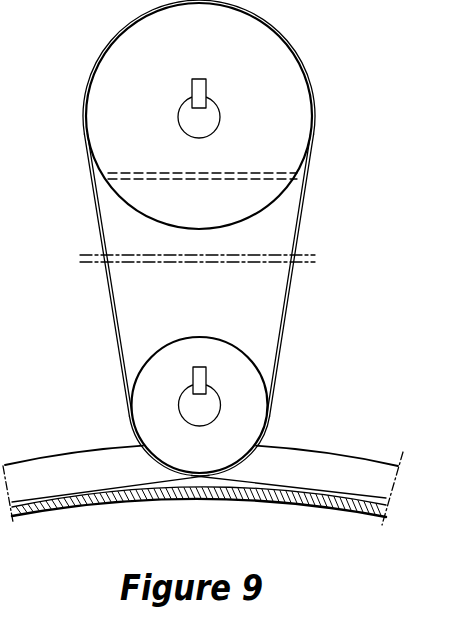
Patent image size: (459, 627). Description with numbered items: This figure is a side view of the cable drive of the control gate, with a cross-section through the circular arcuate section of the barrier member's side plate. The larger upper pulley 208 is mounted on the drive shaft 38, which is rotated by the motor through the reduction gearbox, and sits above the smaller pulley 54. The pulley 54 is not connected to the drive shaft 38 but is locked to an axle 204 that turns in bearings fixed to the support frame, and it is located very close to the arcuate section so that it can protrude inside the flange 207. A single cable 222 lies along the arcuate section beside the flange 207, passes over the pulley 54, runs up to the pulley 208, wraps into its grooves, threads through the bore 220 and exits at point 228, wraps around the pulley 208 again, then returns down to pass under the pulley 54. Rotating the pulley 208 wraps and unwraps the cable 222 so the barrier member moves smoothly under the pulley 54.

The pulley 208 is at (285, 78).
The drive shaft 38 is at (210, 113).
The bore 220 is at (162, 176).
The exit point 228 is at (102, 174).
The cable 222 is at (101, 226).
The pulley 54 is at (150, 383).
The axle 204 is at (190, 411).
The flange 207 is at (302, 460).